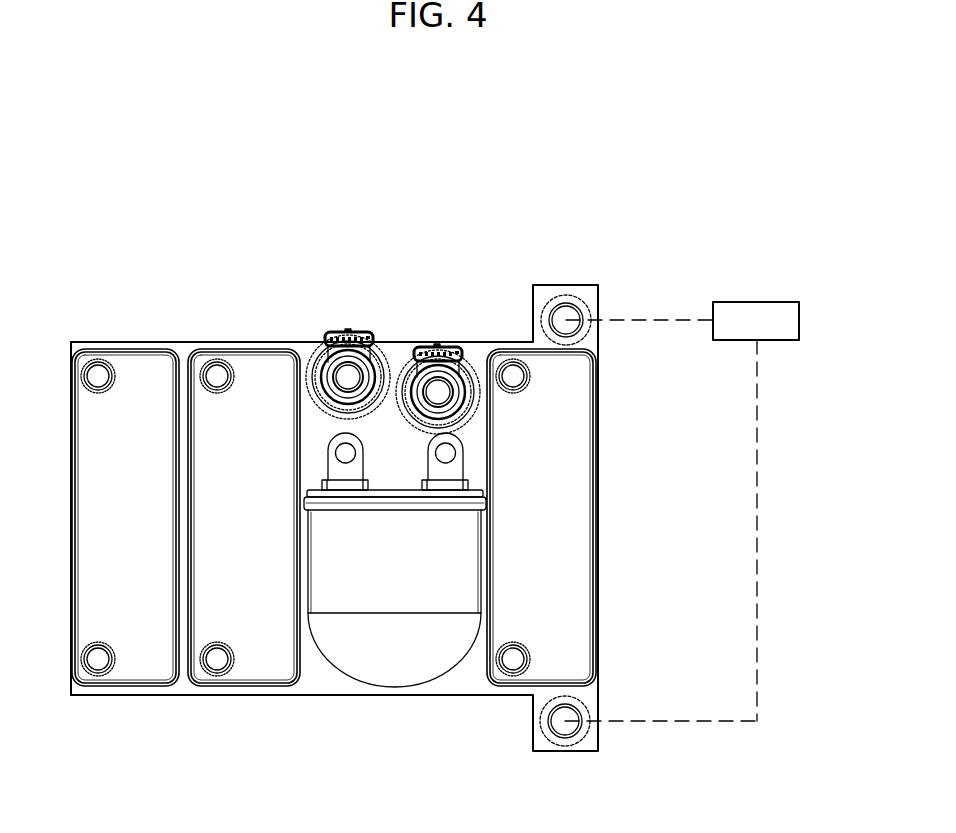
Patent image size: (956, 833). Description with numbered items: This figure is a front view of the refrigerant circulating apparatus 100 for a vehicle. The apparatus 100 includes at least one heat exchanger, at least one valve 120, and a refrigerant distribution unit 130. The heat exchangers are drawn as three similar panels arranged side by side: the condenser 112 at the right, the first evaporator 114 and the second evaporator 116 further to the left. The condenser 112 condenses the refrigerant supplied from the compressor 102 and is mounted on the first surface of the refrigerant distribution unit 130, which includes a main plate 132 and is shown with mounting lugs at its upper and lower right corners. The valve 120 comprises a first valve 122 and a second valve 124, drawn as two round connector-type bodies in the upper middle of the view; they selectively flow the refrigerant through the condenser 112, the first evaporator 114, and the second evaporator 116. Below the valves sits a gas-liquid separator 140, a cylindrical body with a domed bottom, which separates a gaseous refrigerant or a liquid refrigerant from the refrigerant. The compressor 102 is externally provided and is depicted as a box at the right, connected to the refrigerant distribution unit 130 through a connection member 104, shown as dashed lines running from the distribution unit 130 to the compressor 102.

The refrigerant circulating apparatus 100 is at (322, 143).
The compressor 102 is at (757, 300).
The connection member 104 is at (653, 318).
The condenser 112 is at (567, 595).
The first evaporator 114 is at (262, 670).
The second evaporator 116 is at (137, 670).
The valve 120 is at (393, 331).
The first valve 122 is at (375, 367).
The second valve 124 is at (473, 372).
The refrigerant distribution unit 130 is at (580, 272).
The main plate 132 is at (475, 680).
The gas-liquid separator 140 is at (397, 668).